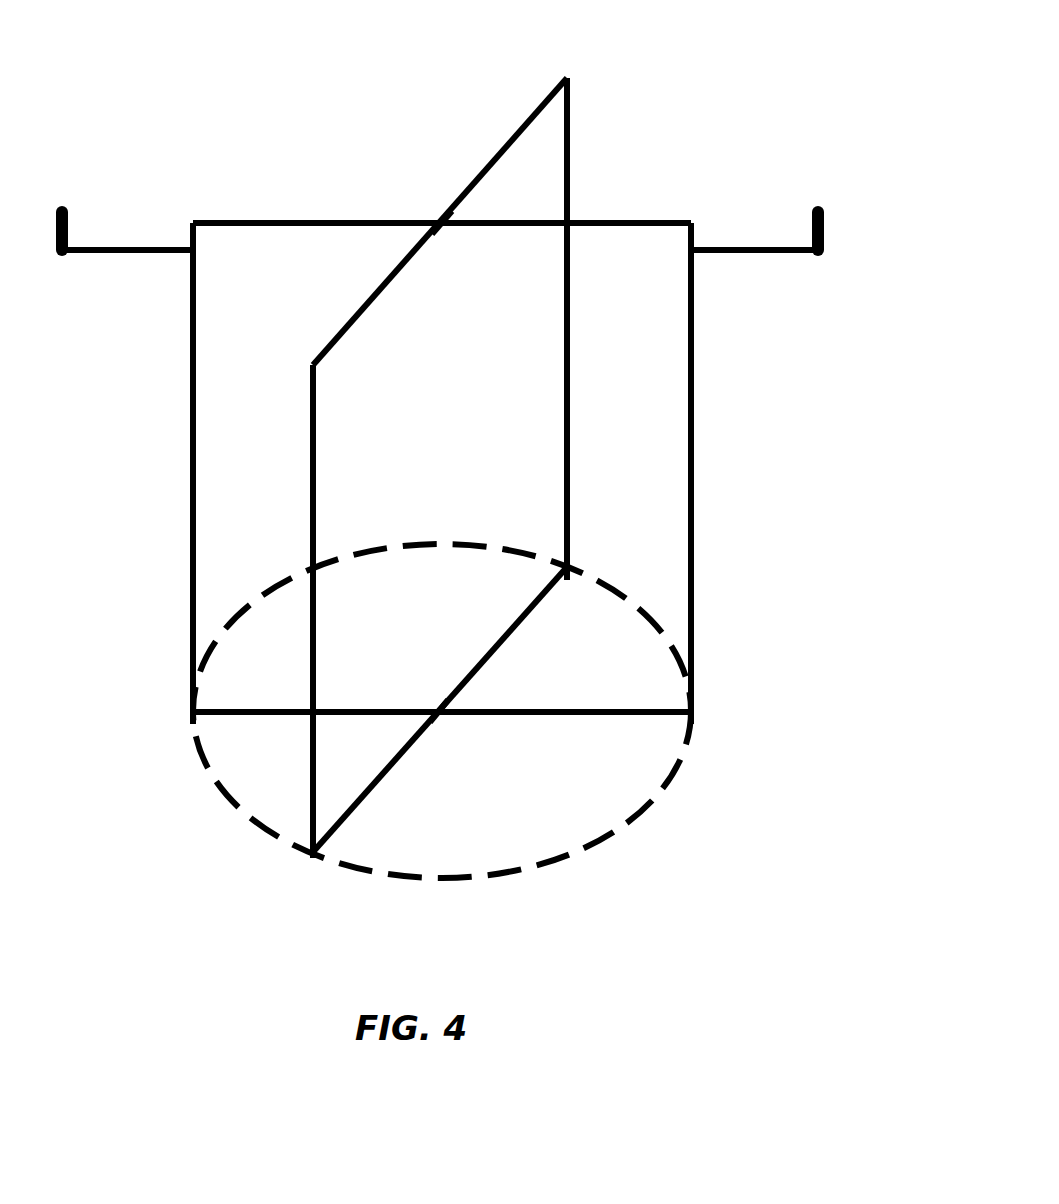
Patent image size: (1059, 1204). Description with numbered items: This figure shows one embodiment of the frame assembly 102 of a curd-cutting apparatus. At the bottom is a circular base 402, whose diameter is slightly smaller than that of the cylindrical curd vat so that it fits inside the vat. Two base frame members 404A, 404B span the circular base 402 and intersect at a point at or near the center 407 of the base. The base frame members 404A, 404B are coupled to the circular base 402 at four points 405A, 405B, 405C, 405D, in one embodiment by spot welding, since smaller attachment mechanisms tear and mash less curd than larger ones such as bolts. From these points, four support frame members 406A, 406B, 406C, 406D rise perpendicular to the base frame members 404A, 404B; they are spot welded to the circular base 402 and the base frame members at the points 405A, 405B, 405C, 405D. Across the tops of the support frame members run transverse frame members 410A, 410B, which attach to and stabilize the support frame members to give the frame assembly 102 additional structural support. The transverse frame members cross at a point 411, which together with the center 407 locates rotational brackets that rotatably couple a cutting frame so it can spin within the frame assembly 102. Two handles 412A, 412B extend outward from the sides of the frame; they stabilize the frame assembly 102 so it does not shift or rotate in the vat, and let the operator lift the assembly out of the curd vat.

The frame assembly 102 is at (739, 34).
The circular base 402 is at (650, 806).
The base frame member 404A is at (514, 716).
The base frame member 404B is at (508, 634).
The coupling point 405A is at (694, 712).
The coupling point 405B is at (314, 855).
The coupling point 405C is at (183, 712).
The coupling point 405D is at (570, 567).
The support frame member 406A is at (694, 405).
The support frame member 406B is at (181, 515).
The support frame member 406C is at (310, 518).
The support frame member 406D is at (571, 405).
The center point 407 is at (440, 714).
The transverse frame member 410A is at (240, 223).
The transverse frame member 410B is at (525, 125).
The rotational bracket point 411 is at (446, 226).
The handle 412A is at (825, 235).
The handle 412B is at (70, 237).